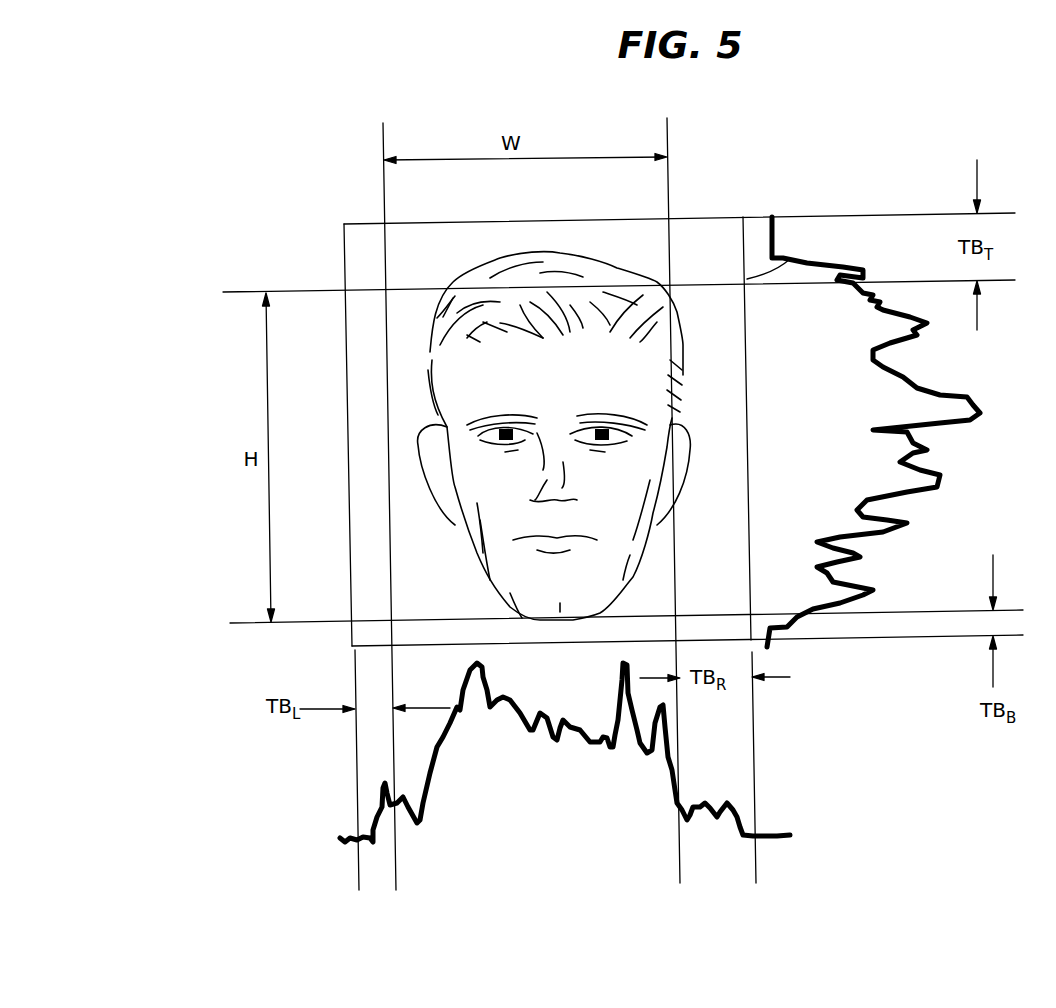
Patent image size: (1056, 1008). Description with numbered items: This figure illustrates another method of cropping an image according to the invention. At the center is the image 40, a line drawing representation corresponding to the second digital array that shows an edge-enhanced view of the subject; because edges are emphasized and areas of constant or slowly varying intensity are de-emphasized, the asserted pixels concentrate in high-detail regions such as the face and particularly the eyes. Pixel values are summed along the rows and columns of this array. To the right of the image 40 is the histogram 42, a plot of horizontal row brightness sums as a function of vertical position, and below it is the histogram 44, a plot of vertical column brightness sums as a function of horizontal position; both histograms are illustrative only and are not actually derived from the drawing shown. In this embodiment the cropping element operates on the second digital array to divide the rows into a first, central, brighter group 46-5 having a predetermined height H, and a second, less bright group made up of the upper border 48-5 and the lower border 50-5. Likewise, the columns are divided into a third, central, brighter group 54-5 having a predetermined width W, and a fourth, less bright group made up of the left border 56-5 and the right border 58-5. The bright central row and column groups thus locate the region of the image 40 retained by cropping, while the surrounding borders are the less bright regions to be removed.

The image 40 is at (725, 218).
The histogram 42 is at (970, 388).
The histogram 44 is at (737, 796).
The first, central, brighter group of rows 46-5 is at (617, 285).
The upper border 48-5 is at (508, 221).
The lower border 50-5 is at (375, 648).
The third, central, brighter group of columns 54-5 is at (389, 543).
The left border 56-5 is at (346, 358).
The right border 58-5 is at (790, 259).